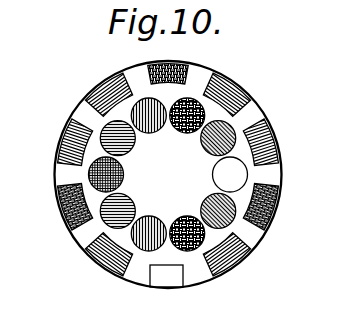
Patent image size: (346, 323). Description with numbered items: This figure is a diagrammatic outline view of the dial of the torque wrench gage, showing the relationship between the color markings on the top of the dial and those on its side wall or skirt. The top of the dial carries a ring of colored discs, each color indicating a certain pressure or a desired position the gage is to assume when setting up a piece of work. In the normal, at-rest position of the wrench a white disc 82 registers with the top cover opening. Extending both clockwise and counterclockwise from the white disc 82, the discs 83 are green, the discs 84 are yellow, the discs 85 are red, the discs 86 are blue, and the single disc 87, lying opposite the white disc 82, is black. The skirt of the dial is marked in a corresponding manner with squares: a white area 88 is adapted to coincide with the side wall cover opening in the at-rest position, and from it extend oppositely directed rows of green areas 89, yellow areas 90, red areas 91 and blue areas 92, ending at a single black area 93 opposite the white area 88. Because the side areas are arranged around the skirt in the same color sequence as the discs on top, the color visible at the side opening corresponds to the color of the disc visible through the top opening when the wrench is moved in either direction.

The white disc 82 is at (238, 173).
The green discs 83 is at (233, 130).
The yellow discs 84 is at (189, 101).
The red discs 85 is at (143, 100).
The blue discs 86 is at (103, 128).
The black disc 87 is at (93, 173).
The white area 88 is at (173, 280).
The green areas 89 is at (110, 243).
The yellow areas 90 is at (66, 210).
The red areas 91 is at (63, 133).
The blue areas 92 is at (107, 82).
The black area 93 is at (174, 65).